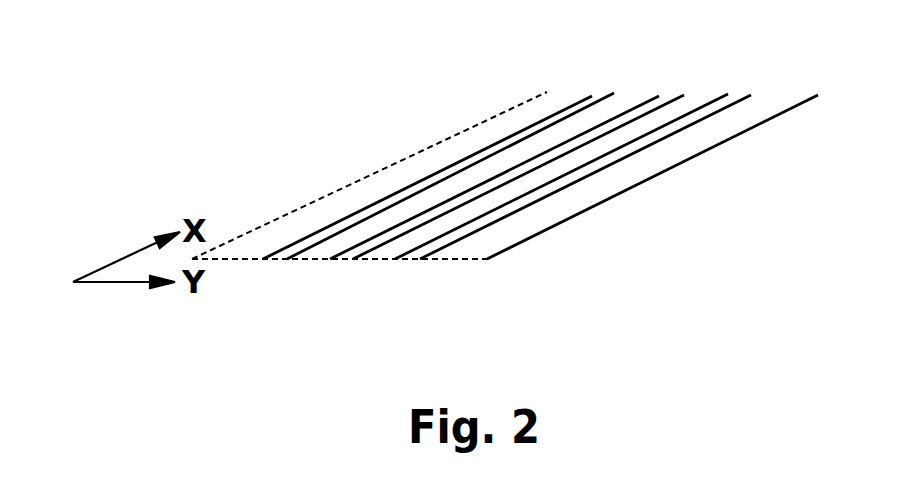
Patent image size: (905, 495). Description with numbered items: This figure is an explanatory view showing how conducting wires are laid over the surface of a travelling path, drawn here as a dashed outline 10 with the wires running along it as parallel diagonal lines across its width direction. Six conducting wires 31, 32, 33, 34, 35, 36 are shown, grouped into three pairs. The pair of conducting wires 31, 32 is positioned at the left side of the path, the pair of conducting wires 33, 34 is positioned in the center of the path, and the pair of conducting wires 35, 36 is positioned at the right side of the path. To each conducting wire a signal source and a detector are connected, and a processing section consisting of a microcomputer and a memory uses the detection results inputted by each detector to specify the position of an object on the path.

The substrate 10 is at (430, 140).
The conducting wire 31 is at (263, 259).
The conducting wire 32 is at (287, 259).
The conducting wire 33 is at (658, 96).
The conducting wire 34 is at (683, 96).
The conducting wire 35 is at (397, 259).
The conducting wire 36 is at (417, 259).